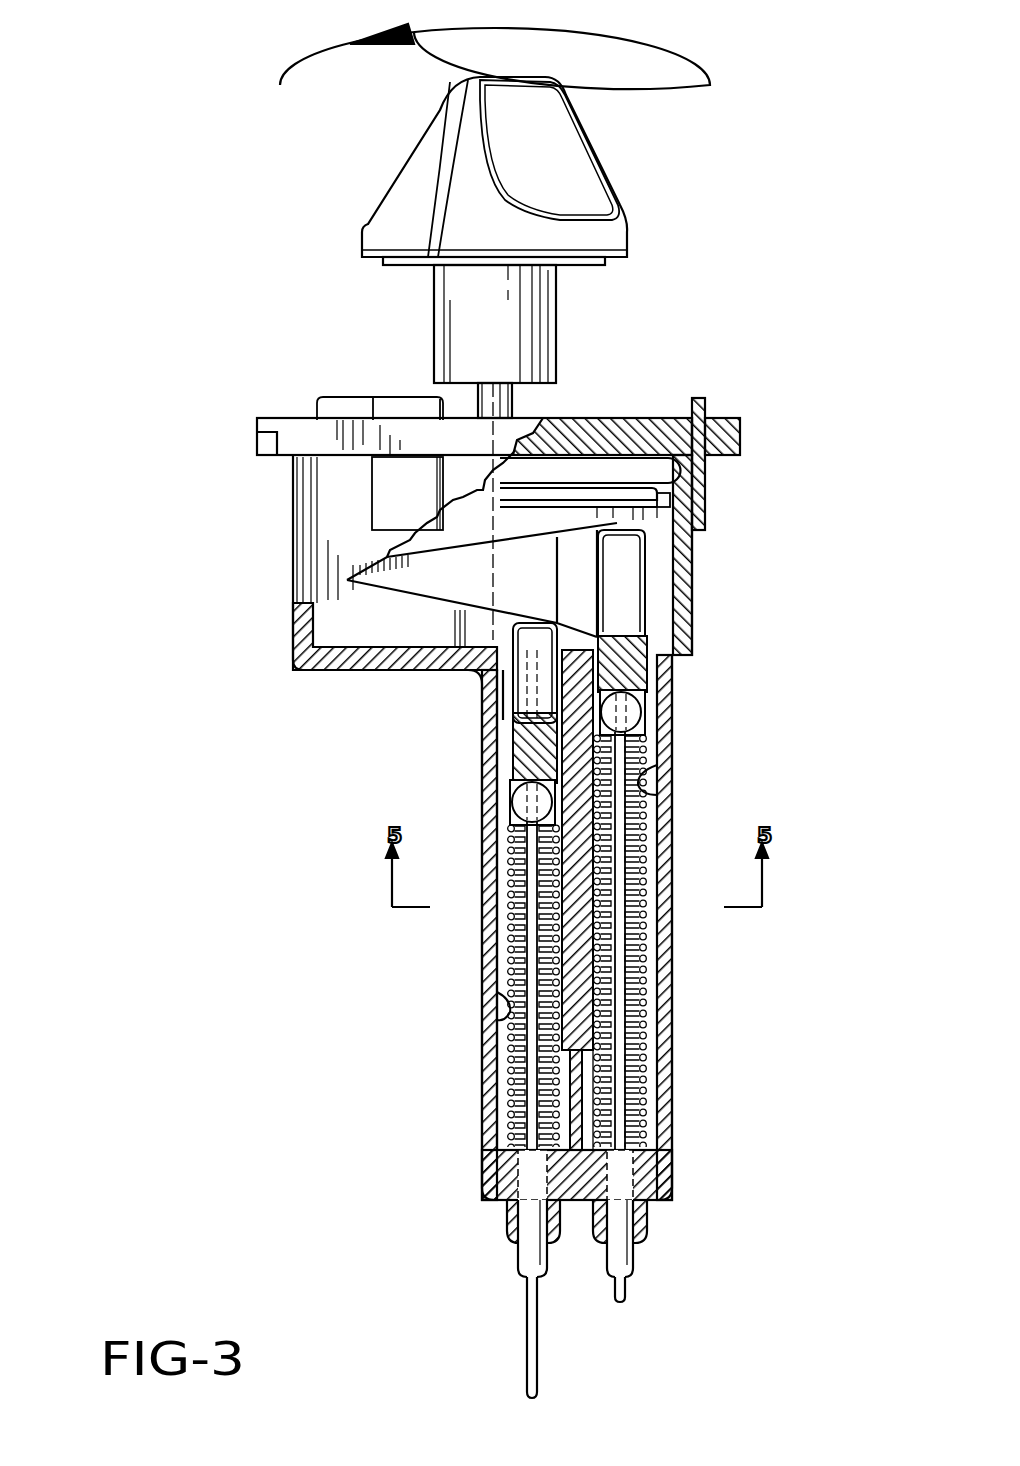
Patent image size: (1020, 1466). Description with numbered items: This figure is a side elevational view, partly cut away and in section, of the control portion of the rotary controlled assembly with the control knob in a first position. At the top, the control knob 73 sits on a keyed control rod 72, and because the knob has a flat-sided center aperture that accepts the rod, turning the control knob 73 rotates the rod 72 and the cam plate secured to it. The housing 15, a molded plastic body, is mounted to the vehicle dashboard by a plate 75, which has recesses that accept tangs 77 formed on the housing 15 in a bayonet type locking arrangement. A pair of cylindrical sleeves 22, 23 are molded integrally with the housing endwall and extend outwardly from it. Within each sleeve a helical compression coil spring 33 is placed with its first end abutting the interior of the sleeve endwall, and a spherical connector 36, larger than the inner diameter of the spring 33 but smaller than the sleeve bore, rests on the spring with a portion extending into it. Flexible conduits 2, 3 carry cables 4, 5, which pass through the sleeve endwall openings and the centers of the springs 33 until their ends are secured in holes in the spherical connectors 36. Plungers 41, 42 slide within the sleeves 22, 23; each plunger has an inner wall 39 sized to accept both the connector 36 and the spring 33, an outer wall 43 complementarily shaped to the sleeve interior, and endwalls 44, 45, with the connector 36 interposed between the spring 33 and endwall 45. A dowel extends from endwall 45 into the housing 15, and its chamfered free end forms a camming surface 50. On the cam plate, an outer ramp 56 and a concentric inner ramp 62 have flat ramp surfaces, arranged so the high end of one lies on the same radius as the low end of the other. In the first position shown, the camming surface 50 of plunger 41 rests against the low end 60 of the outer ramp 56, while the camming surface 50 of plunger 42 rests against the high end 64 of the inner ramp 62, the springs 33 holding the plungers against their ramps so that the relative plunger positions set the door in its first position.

The flexible conduit 2 is at (624, 1258).
The flexible conduit 3 is at (527, 1260).
The cable 4 is at (624, 1288).
The cable 5 is at (528, 1318).
The housing 15 is at (286, 517).
The cylindrical sleeve 22 is at (667, 1020).
The cylindrical sleeve 23 is at (488, 952).
The helical compression coil spring 33 is at (510, 1113).
The spherical connector 36 is at (633, 713).
The inner wall 39 is at (660, 764).
The plunger 41 is at (657, 803).
The plunger 42 is at (497, 848).
The outer wall 43 is at (657, 862).
The endwall 44 is at (643, 960).
The endwall 45 is at (652, 667).
The camming surface 50 is at (520, 628).
The outer ramp 56 is at (674, 516).
The low end 60 is at (632, 517).
The inner ramp 62 is at (400, 605).
The high end 64 is at (480, 672).
The control rod 72 is at (488, 392).
The control knob 73 is at (593, 197).
The plate 75 is at (619, 428).
The tang 77 is at (705, 410).